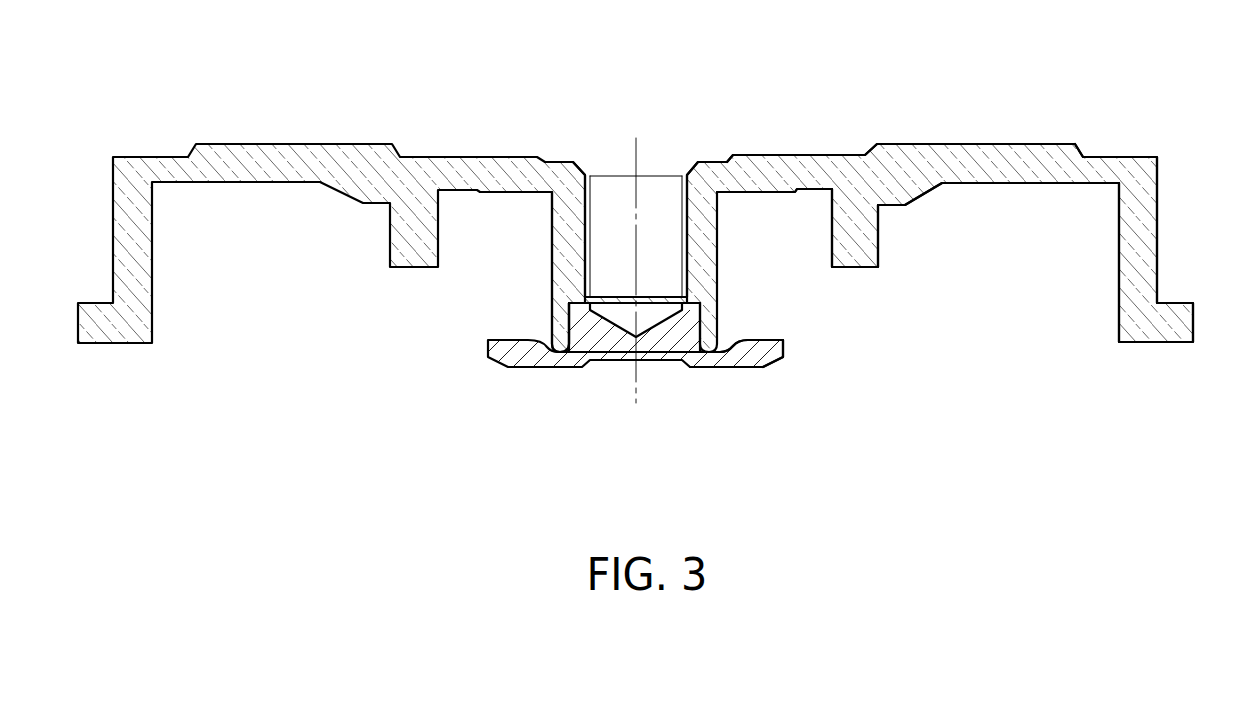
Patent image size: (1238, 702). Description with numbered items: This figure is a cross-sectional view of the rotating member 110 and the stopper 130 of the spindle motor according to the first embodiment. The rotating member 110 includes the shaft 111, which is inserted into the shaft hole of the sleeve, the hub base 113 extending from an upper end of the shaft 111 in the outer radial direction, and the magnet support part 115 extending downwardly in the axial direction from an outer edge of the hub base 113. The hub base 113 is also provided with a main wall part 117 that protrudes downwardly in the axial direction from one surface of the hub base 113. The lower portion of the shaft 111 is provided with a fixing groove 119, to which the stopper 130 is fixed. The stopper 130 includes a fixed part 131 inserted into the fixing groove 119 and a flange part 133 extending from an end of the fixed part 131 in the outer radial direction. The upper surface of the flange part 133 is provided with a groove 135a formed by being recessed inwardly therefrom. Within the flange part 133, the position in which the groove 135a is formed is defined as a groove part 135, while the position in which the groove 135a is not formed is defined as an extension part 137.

The rotating member 110 is at (690, 82).
The shaft 111 is at (705, 193).
The hub base 113 is at (912, 160).
The magnet support part 115 is at (1143, 228).
The main wall part 117 is at (867, 240).
The fixing groove 119 is at (577, 290).
The stopper 130 is at (757, 478).
The fixed part 131 is at (673, 340).
The flange part 133 is at (728, 437).
The groove part 135 is at (722, 360).
The groove 135a is at (735, 342).
The extension part 137 is at (758, 350).